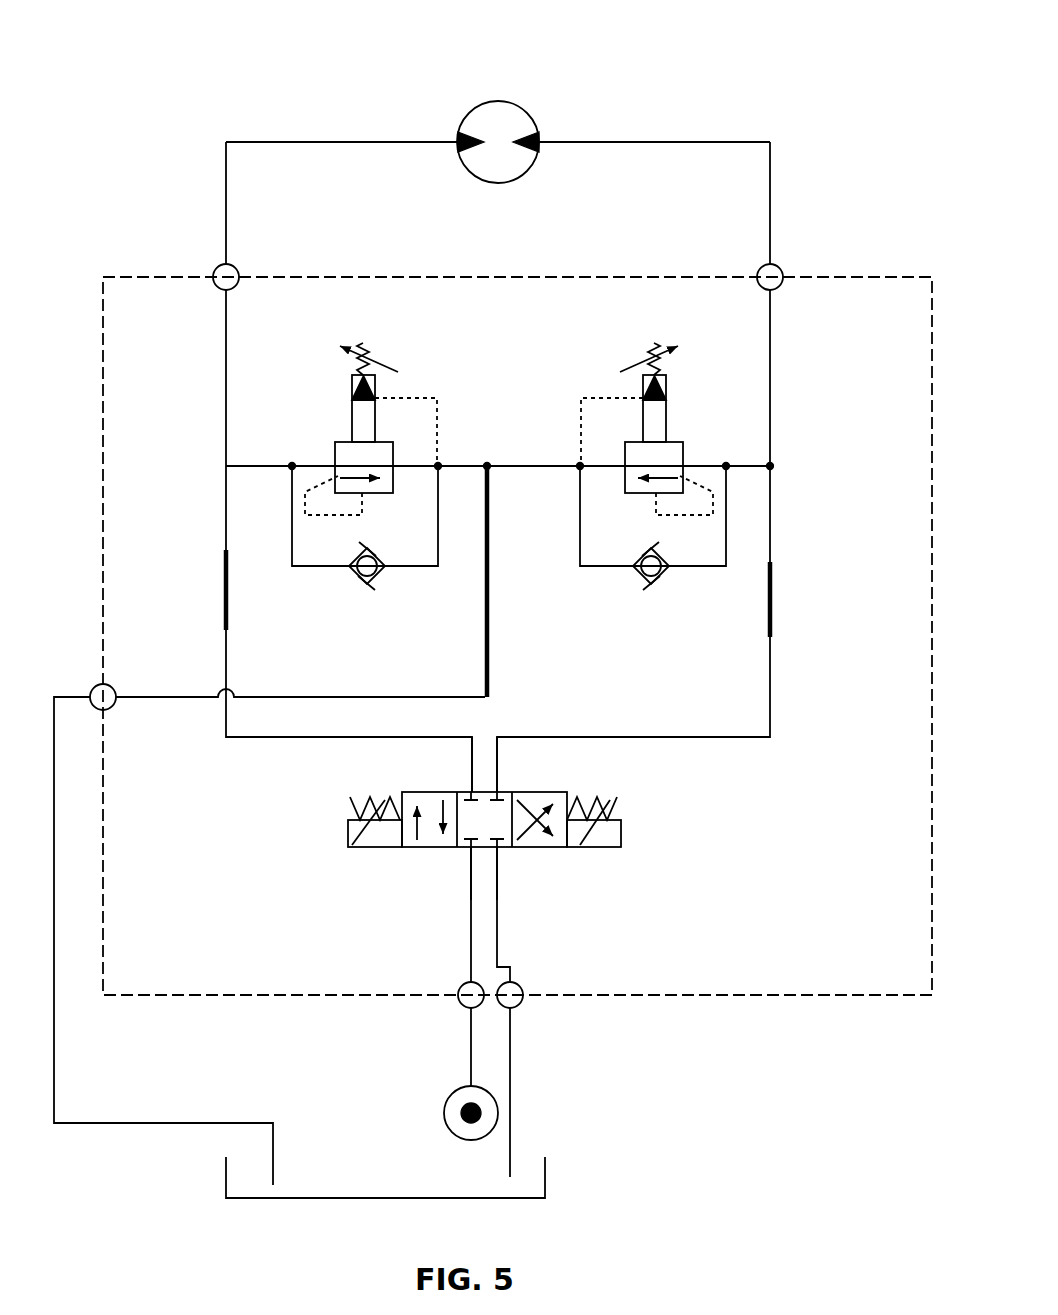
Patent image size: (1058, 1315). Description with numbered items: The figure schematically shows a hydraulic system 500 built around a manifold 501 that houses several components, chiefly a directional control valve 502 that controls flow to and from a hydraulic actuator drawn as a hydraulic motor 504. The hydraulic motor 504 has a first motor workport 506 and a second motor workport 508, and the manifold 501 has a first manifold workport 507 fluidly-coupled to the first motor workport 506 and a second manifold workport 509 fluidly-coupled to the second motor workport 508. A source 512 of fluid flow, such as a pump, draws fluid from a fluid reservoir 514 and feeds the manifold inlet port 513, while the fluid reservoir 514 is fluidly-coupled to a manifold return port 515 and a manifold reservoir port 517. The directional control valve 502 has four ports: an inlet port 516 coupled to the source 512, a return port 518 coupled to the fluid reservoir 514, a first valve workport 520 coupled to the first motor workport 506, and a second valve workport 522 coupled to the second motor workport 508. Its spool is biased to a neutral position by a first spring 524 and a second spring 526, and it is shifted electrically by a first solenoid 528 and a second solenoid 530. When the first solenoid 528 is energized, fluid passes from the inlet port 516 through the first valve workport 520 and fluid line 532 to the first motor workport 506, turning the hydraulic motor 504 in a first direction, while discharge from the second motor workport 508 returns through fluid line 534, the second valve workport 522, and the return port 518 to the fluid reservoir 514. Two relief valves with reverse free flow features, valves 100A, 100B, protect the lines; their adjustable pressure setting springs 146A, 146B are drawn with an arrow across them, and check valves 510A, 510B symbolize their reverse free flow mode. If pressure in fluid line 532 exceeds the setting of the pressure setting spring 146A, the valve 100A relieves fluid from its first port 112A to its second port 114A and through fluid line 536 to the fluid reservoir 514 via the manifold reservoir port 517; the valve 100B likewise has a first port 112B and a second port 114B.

The hydraulic system 500 is at (140, 80).
The manifold 501 is at (152, 275).
The directional control valve 502 is at (485, 843).
The hydraulic motor 504 is at (492, 100).
The first motor workport 506 is at (460, 135).
The second motor workport 508 is at (540, 135).
The first manifold workport 507 is at (218, 265).
The second manifold workport 509 is at (781, 265).
The valve 100A is at (391, 476).
The valve 100B is at (658, 476).
The first port 112A is at (292, 462).
The second port 114A is at (440, 462).
The first port 112B is at (728, 462).
The second port 114B is at (578, 470).
The pressure setting spring 146A is at (372, 340).
The pressure setting spring 146B is at (646, 340).
The check valve 510A is at (386, 584).
The check valve 510B is at (633, 584).
The source 512 is at (444, 1113).
The manifold inlet port 513 is at (460, 1008).
The fluid reservoir 514 is at (545, 1165).
The manifold return port 515 is at (522, 1008).
The inlet port 516 is at (467, 850).
The manifold reservoir port 517 is at (98, 690).
The return port 518 is at (503, 850).
The first valve workport 520 is at (468, 790).
The second valve workport 522 is at (500, 790).
The first spring 524 is at (346, 798).
The second spring 526 is at (620, 798).
The first solenoid 528 is at (348, 838).
The second solenoid 530 is at (621, 838).
The fluid line 532 is at (226, 608).
The fluid line 534 is at (770, 600).
The fluid line 536 is at (495, 697).